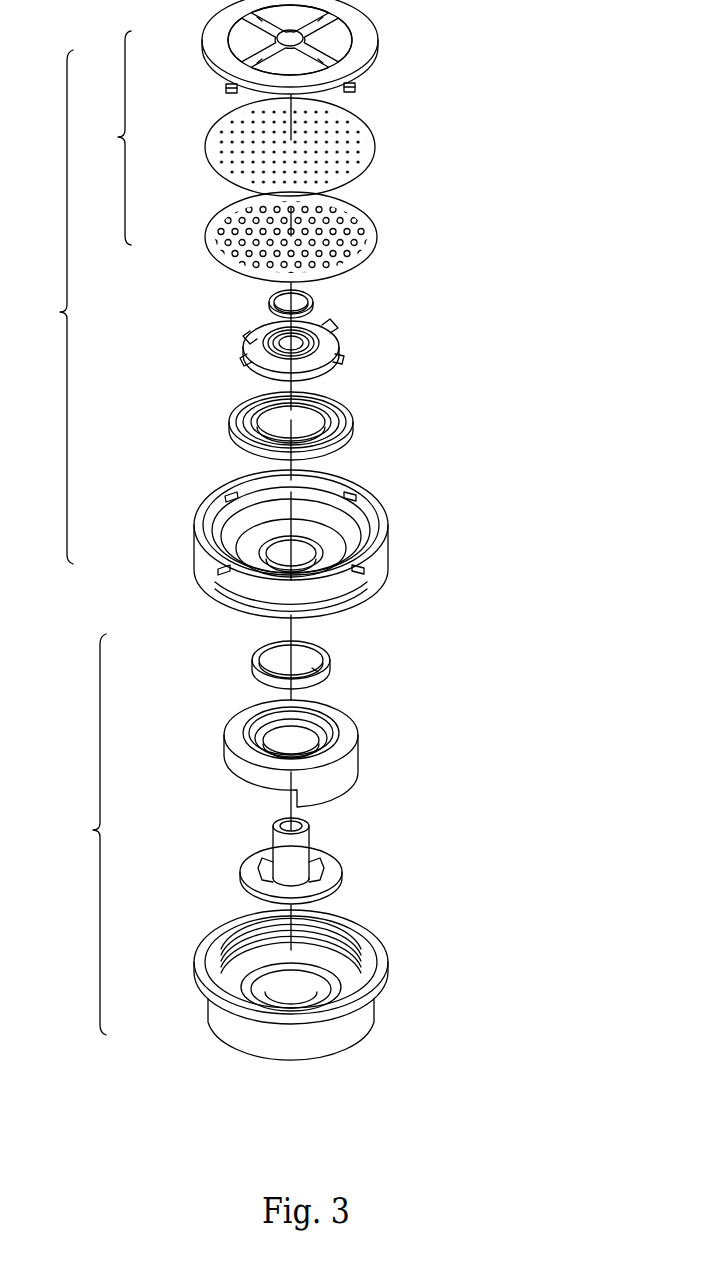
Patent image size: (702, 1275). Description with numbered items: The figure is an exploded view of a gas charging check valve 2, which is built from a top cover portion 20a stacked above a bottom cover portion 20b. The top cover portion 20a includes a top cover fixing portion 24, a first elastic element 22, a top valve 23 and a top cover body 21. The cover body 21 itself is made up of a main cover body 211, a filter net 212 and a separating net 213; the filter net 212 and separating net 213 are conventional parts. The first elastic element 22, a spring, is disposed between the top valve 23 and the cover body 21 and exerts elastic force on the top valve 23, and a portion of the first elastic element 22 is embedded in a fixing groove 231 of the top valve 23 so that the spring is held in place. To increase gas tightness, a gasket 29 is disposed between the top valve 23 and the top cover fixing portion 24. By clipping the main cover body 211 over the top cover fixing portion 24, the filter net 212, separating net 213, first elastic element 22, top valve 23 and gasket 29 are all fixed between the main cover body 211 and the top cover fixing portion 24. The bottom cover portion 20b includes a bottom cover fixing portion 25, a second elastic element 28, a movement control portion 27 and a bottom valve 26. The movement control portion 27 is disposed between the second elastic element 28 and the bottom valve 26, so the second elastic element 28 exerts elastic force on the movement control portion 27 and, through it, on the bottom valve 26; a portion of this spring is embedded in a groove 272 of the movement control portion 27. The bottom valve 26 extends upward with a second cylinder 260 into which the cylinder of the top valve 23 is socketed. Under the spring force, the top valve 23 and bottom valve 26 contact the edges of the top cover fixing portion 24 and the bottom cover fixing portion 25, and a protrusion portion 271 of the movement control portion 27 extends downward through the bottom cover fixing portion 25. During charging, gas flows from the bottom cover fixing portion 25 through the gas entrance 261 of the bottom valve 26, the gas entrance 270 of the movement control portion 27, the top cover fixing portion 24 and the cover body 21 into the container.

The gas charging check valve 2 is at (497, 77).
The top cover portion 20a is at (198, 309).
The bottom cover portion 20b is at (256, 847).
The top cover body 21 is at (231, 141).
The main cover body 211 is at (214, 41).
The filter net 212 is at (213, 143).
The separating net 213 is at (213, 231).
The first elastic element 22 is at (268, 300).
The top valve 23 is at (258, 359).
The fixing groove 231 is at (262, 338).
The gasket 29 is at (243, 430).
The top cover fixing portion 24 is at (213, 565).
The second elastic element 28 is at (252, 663).
The movement control portion 27 is at (360, 747).
The gas entrance 270 is at (278, 733).
The groove 272 is at (246, 732).
The protrusion portion 271 is at (342, 793).
The bottom valve 26 is at (245, 886).
The second cylinder 260 is at (271, 845).
The gas entrance 261 is at (267, 872).
The bottom cover fixing portion 25 is at (211, 1012).